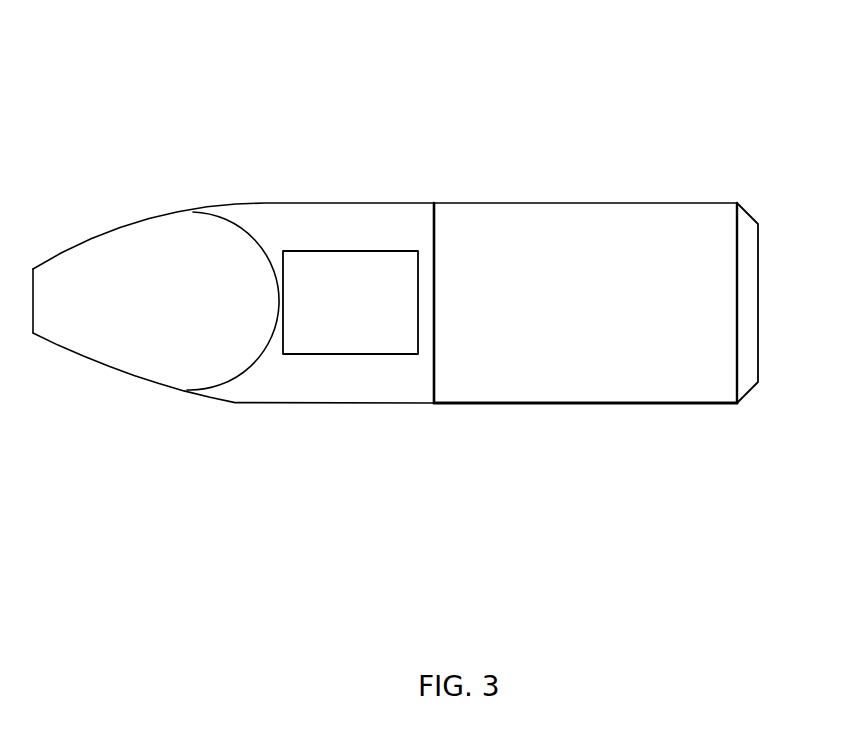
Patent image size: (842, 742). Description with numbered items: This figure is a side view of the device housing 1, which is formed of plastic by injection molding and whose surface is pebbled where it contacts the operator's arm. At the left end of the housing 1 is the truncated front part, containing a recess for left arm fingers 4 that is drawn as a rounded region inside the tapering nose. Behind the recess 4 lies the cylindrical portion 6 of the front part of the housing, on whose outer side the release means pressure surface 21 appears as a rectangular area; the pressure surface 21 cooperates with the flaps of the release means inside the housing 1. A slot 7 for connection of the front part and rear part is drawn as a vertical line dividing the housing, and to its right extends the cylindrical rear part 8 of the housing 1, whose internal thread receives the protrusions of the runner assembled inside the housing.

The device housing 1 is at (285, 228).
The recess for left arm fingers 4 is at (172, 290).
The cylindrical portion of the front part of the housing 6 is at (362, 383).
The release means pressure surface 21 is at (353, 278).
The slot for connection of the front part and rear part 7 is at (436, 275).
The cylindrical rear part of the housing 8 is at (600, 263).